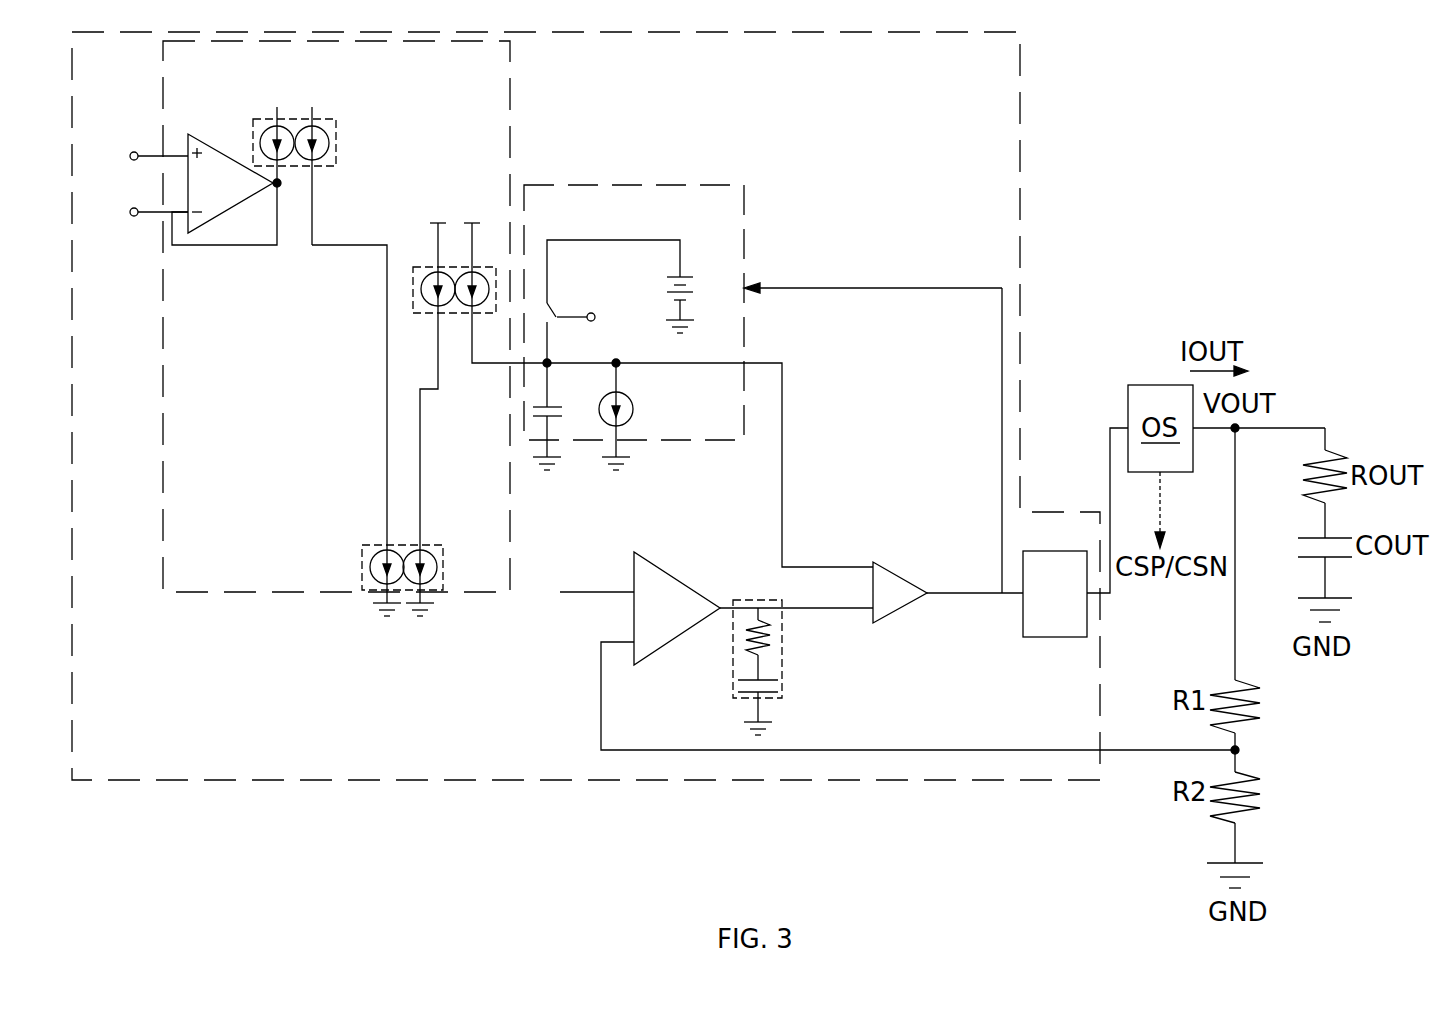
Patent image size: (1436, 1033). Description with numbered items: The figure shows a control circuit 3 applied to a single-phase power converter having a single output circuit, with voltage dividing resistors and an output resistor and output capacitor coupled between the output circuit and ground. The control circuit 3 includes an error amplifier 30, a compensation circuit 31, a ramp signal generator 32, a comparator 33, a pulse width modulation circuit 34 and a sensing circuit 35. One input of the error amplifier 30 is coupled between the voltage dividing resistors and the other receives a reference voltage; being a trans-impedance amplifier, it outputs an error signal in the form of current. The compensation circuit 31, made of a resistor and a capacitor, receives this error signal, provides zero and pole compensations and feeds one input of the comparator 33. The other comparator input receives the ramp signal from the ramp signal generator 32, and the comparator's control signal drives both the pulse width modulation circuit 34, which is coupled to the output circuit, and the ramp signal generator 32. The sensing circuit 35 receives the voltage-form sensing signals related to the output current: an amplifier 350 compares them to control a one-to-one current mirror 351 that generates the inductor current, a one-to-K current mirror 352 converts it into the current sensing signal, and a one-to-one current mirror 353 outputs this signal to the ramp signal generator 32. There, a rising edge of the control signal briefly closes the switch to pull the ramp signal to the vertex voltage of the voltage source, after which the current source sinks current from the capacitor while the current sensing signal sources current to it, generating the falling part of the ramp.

The control circuit 3 is at (1002, 77).
The sensing circuit 35 is at (495, 72).
The amplifier 350 is at (242, 197).
The current mirror 351 is at (331, 120).
The current mirror 352 is at (443, 545).
The current mirror 353 is at (416, 266).
The ramp signal generator 32 is at (728, 220).
The error amplifier 30 is at (677, 622).
The compensation circuit 31 is at (732, 637).
The comparator 33 is at (903, 606).
The pulse width modulation circuit 34 is at (1070, 606).